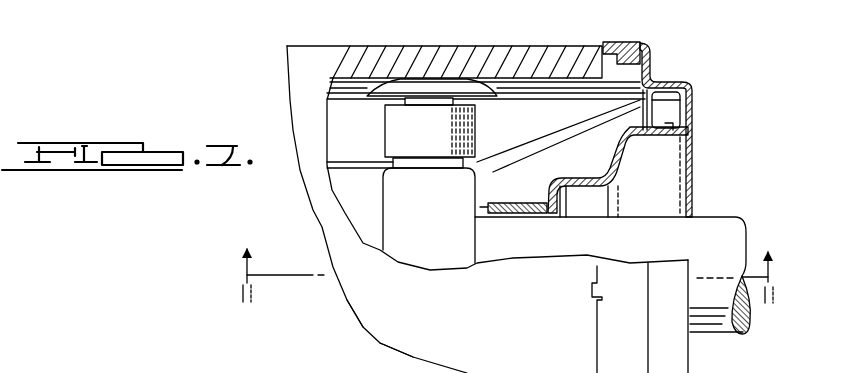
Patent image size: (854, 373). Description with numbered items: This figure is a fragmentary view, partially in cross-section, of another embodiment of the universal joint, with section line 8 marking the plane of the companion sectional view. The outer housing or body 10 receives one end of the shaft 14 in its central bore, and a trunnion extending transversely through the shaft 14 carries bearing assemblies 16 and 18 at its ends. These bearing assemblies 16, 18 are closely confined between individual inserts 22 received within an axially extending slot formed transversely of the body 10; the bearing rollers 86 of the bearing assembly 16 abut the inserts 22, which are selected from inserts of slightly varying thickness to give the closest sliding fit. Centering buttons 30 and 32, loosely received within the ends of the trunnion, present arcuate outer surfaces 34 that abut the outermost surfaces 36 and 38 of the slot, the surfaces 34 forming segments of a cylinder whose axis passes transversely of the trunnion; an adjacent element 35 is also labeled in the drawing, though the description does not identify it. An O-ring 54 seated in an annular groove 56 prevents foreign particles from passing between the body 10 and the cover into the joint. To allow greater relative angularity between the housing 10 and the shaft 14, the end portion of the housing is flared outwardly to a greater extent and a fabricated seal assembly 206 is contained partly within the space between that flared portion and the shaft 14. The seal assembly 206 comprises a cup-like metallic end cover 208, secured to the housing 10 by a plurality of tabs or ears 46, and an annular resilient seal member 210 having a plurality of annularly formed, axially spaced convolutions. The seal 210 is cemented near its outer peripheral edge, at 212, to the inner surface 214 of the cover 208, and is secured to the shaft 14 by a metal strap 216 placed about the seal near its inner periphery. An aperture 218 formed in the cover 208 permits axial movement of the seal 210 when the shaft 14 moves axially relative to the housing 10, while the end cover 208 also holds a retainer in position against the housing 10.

The section line 8 is at (502, 251).
The outer housing or body 10 is at (457, 83).
The shaft 14 is at (710, 218).
The bearing assembly 16 is at (382, 141).
The bearing assembly 18 is at (263, 1).
The inserts 22 is at (328, 112).
The centering button 30 is at (420, 73).
The centering button 32 is at (436, 41).
The outer surfaces 34 is at (400, 65).
The bracket 35 is at (563, 87).
The outermost surface of slot 36 is at (500, 80).
The outermost surface of slot 38 is at (451, 48).
The tabs or ears 46 is at (597, 300).
The O-ring 54 is at (384, 358).
The annular groove 56 is at (603, 45).
The bearing rollers 86 is at (450, 124).
The fabricated seal assembly 206 is at (664, 51).
The cup-like metallic end cover 208 is at (350, 372).
The annular resilient seal member 210 is at (626, 158).
The cemented joint 212 is at (665, 72).
The inner surface of cover 214 is at (690, 77).
The metal strap 216 is at (530, 188).
The aperture 218 is at (692, 103).